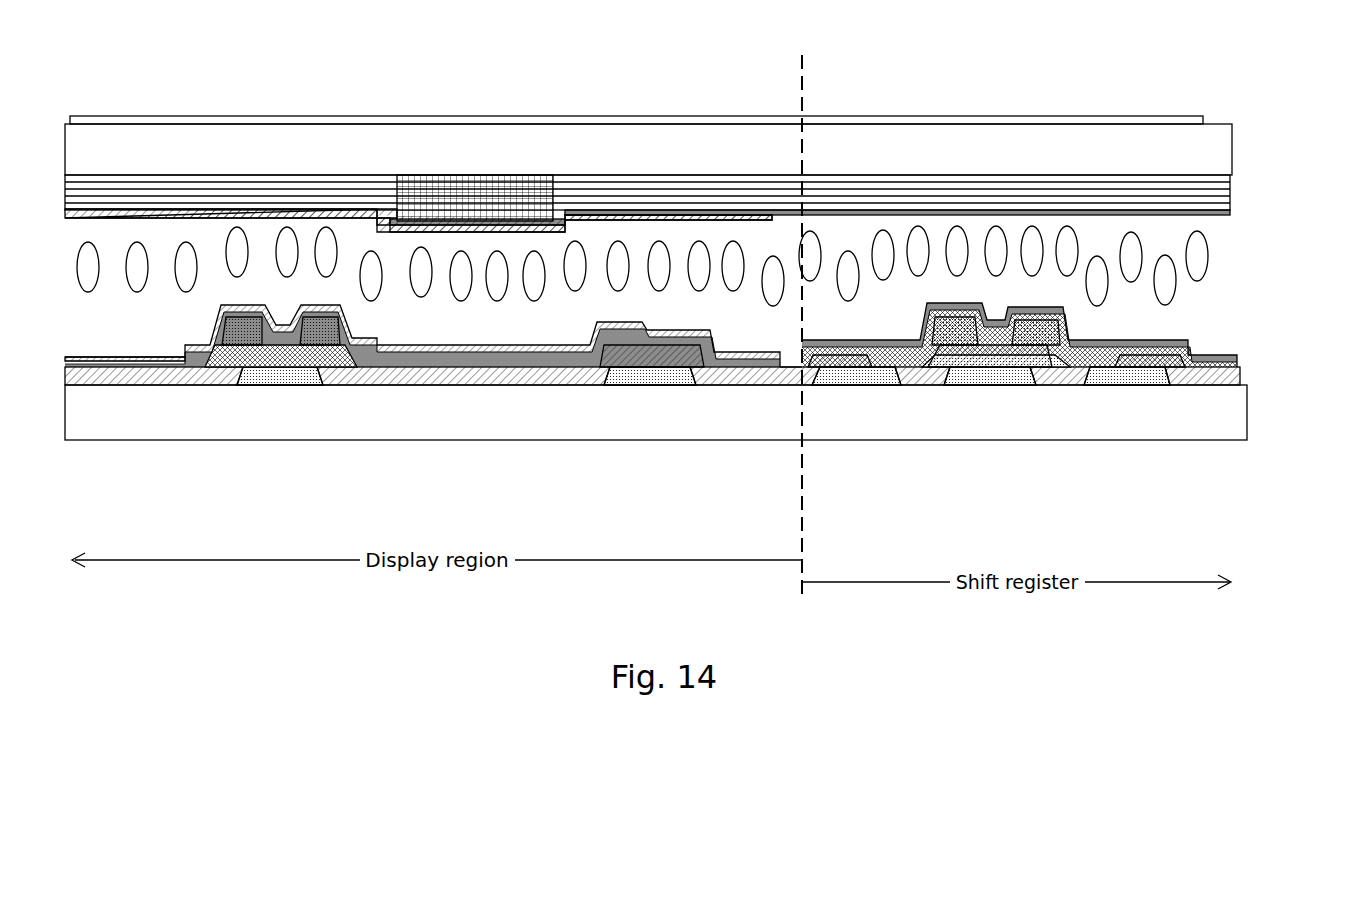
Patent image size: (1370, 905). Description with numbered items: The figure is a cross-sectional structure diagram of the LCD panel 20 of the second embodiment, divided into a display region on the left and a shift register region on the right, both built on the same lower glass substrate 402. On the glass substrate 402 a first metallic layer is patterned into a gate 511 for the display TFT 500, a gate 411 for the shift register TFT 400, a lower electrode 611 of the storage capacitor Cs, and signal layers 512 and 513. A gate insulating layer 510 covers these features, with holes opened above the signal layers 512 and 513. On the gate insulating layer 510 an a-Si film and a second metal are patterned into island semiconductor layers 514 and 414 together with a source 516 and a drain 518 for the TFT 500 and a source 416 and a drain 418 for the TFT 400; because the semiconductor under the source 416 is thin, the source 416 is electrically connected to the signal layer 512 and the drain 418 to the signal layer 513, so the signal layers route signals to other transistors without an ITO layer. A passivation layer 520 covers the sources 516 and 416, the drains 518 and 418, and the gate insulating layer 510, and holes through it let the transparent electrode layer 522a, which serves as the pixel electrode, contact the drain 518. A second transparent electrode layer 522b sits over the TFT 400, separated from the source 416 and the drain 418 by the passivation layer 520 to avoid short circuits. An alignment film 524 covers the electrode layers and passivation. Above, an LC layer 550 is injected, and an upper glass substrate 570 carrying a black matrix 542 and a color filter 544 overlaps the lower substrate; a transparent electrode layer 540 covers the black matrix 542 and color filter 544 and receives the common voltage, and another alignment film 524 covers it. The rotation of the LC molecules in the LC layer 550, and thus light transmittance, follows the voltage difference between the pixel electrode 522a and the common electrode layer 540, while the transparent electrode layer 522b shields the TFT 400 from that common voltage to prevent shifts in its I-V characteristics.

The LCD panel 20 is at (617, 28).
The glass substrate 570 is at (1212, 145).
The transparent electrode layer 540 is at (1228, 205).
The color filter 544 is at (493, 185).
The black matrix 542 is at (702, 193).
The alignment film 524 is at (150, 217).
The LC layer 550 is at (1200, 260).
The glass substrate 402 is at (1212, 425).
The gate insulating layer 510 is at (483, 377).
The gate 511 is at (262, 375).
The lower electrode 611 is at (645, 372).
The signal layer 512 is at (853, 372).
The gate 411 is at (980, 373).
The signal layer 513 is at (1120, 380).
The TFT 500 is at (422, 414).
The source 516 is at (193, 355).
The semiconductor layer 514 is at (288, 342).
The drain 518 is at (369, 395).
The transparent electrode layer 522a is at (550, 355).
The storage capacitor Cs is at (686, 397).
The passivation layer 520 is at (792, 362).
The transparent electrode layer 522b is at (1123, 337).
The TFT 400 is at (1028, 435).
The source 416 is at (947, 330).
The semiconductor layer 414 is at (1000, 342).
The drain 418 is at (1025, 333).